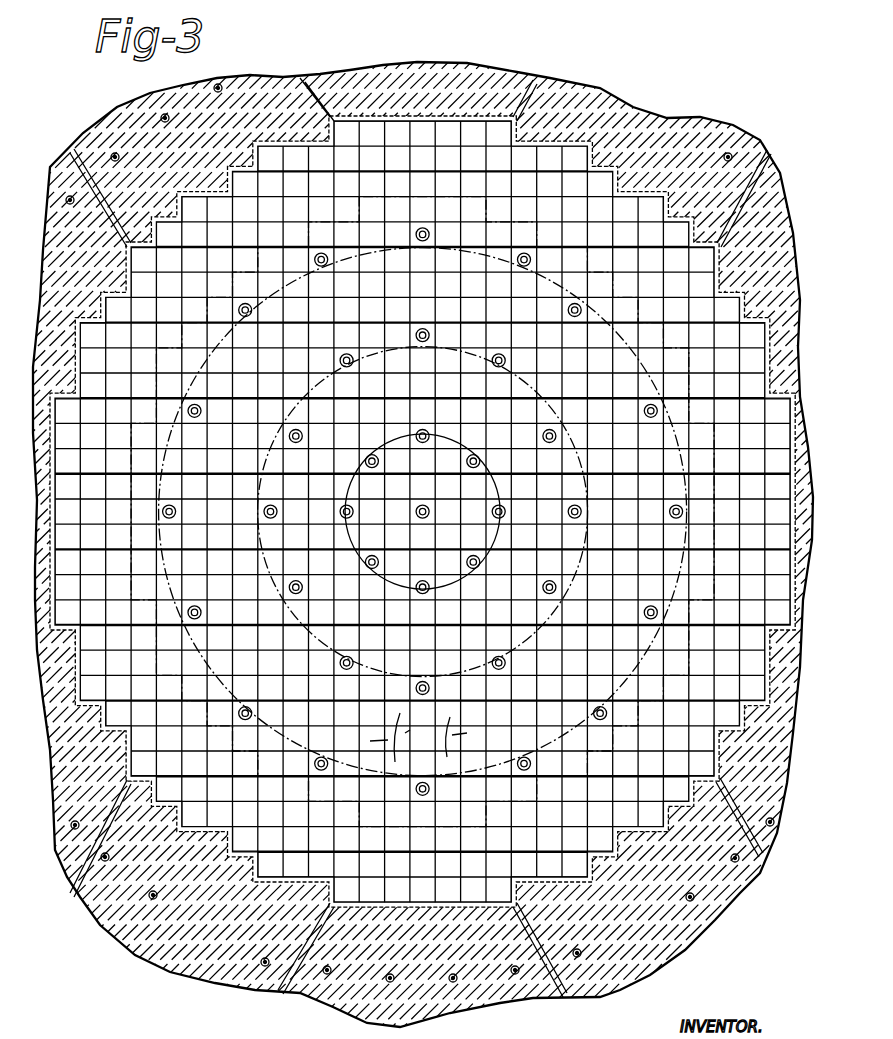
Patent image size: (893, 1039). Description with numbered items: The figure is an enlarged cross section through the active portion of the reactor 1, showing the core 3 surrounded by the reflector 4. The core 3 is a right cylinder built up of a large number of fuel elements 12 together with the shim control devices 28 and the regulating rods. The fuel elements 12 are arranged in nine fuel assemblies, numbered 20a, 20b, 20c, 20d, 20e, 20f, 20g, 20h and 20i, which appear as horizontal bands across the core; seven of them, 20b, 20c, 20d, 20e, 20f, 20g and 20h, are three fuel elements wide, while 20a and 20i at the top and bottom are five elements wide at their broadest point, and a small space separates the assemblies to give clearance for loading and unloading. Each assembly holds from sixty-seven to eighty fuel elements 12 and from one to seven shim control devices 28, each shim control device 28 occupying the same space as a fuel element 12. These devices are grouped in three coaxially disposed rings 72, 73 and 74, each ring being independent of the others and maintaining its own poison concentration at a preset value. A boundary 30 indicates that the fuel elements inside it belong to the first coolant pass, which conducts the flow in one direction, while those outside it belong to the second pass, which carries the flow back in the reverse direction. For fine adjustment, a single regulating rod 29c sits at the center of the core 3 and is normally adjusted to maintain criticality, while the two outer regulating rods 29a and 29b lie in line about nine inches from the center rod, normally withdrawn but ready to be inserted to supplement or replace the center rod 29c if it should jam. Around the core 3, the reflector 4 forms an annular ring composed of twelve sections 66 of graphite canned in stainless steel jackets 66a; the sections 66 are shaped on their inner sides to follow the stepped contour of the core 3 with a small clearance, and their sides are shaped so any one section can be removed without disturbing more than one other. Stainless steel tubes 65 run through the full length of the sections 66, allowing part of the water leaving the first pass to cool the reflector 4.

The reactor 1 is at (657, 73).
The core 3 is at (443, 151).
The reflector 4 is at (567, 70).
The fuel element 12 is at (418, 737).
The fuel assembly 20a is at (556, 192).
The fuel assembly 20b is at (439, 294).
The fuel assembly 20c is at (432, 370).
The fuel assembly 20d is at (637, 447).
The fuel assembly 20e is at (637, 523).
The fuel assembly 20f is at (242, 600).
The fuel assembly 20g is at (278, 672).
The fuel assembly 20h is at (201, 752).
The fuel assembly 20i is at (487, 850).
The shim control device 28 is at (303, 436).
The regulating rod 29a is at (346, 519).
The regulating rod 29b is at (503, 518).
The regulating rod 29c is at (423, 504).
The boundary 30 is at (360, 810).
The stainless steel tube 65 is at (113, 155).
The reflector section 66 is at (664, 150).
The stainless steel jacket 66a is at (517, 907).
The ring 72 is at (466, 451).
The ring 73 is at (538, 395).
The ring 74 is at (212, 354).